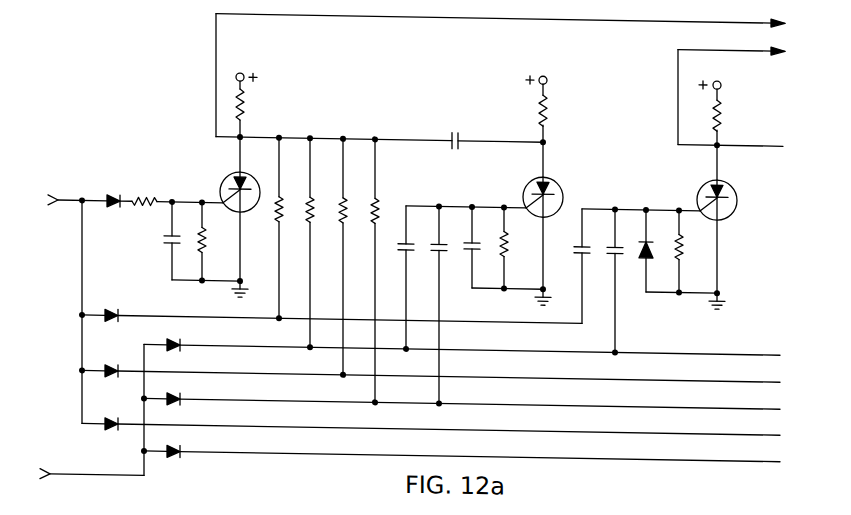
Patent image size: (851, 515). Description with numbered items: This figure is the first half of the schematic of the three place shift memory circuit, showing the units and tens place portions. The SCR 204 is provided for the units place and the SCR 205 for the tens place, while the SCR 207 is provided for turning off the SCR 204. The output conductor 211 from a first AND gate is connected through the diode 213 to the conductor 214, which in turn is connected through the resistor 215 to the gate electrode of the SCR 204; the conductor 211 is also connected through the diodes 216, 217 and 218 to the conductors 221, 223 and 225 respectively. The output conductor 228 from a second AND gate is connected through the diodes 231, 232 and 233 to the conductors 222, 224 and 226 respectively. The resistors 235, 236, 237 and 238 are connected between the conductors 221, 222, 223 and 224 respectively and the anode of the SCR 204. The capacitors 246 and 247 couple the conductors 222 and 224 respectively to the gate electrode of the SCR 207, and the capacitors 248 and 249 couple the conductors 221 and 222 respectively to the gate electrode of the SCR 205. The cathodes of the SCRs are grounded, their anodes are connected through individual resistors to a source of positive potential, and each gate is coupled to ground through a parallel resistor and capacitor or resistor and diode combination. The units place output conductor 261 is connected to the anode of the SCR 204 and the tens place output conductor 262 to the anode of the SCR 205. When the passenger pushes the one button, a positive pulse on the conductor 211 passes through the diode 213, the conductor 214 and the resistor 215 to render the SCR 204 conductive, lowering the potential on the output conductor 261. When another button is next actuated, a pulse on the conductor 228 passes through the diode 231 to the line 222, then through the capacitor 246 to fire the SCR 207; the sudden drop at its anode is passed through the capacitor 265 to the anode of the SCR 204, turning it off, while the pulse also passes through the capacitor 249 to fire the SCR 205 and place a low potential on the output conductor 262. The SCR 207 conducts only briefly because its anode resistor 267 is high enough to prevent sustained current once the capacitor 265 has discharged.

The SCR 204 is at (222, 174).
The SCR 205 is at (700, 171).
The SCR 207 is at (528, 174).
The output conductor 211 is at (68, 196).
The diode 213 is at (107, 195).
The conductor 214 is at (128, 195).
The resistor 215 is at (151, 196).
The diode 216 is at (111, 311).
The diode 217 is at (106, 363).
The diode 218 is at (106, 415).
The conductor 221 is at (220, 311).
The conductor 222 is at (285, 342).
The conductor 223 is at (285, 368).
The conductor 224 is at (288, 395).
The conductor 225 is at (288, 422).
The conductor 226 is at (290, 448).
The output conductor 228 is at (82, 470).
The diode 231 is at (170, 339).
The diode 232 is at (170, 392).
The diode 233 is at (170, 445).
The resistor 235 is at (277, 203).
The resistor 236 is at (307, 203).
The resistor 237 is at (343, 202).
The resistor 238 is at (368, 201).
The capacitor 246 is at (400, 240).
The capacitor 247 is at (430, 236).
The capacitor 248 is at (578, 238).
The capacitor 249 is at (603, 235).
The units place output conductor 261 is at (585, 8).
The tens place output conductor 262 is at (745, 35).
The capacitor 265 is at (453, 124).
The anode resistor 267 is at (549, 101).